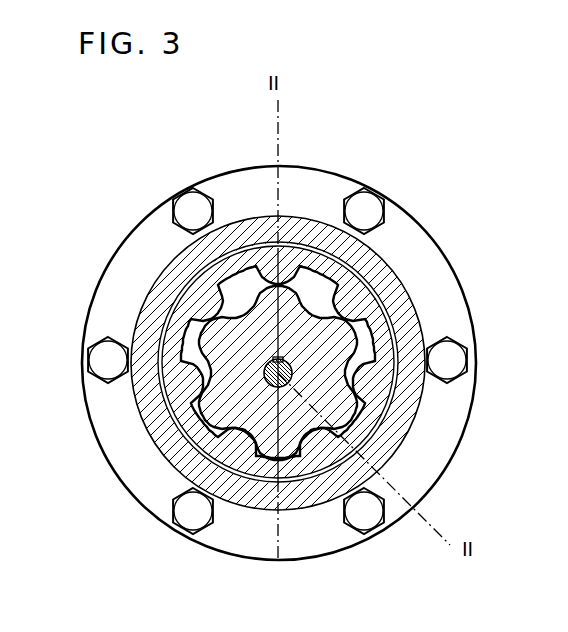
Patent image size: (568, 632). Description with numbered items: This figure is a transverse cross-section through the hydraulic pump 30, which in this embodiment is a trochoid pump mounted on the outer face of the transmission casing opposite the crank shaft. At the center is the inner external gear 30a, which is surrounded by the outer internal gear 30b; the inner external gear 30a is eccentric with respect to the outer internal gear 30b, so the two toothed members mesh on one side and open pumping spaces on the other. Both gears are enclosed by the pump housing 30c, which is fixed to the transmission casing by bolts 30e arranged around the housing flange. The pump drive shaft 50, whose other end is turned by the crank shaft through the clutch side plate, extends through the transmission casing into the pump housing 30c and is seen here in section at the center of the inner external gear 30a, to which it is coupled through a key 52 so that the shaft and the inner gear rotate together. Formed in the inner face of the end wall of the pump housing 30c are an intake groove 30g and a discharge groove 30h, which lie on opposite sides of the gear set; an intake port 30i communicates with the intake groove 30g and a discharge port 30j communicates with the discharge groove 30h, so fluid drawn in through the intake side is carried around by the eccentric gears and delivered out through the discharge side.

The hydraulic pump 30 is at (411, 222).
The inner external gear 30a is at (227, 410).
The outer internal gear 30b is at (197, 288).
The pump housing 30c is at (250, 212).
The bolts 30e is at (188, 203).
The intake groove 30g is at (196, 346).
The discharge groove 30h is at (380, 343).
The intake port 30i is at (188, 458).
The discharge port 30j is at (402, 448).
The pump drive shaft 50 is at (280, 505).
The key 52 is at (402, 299).